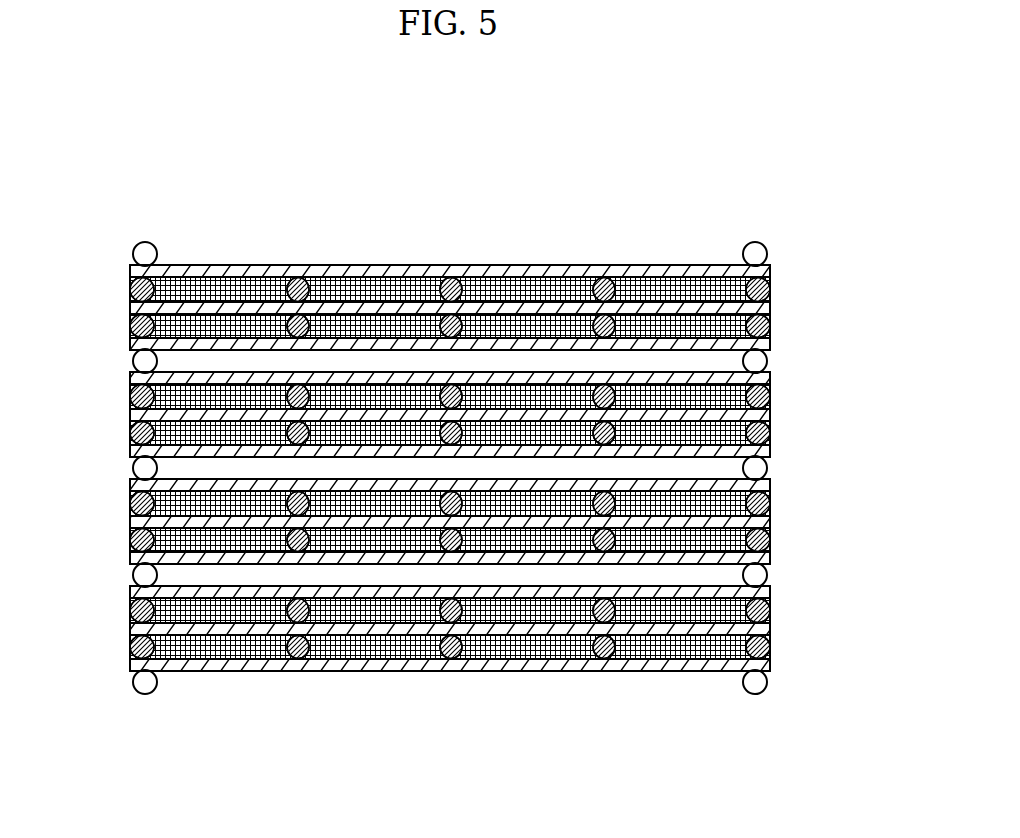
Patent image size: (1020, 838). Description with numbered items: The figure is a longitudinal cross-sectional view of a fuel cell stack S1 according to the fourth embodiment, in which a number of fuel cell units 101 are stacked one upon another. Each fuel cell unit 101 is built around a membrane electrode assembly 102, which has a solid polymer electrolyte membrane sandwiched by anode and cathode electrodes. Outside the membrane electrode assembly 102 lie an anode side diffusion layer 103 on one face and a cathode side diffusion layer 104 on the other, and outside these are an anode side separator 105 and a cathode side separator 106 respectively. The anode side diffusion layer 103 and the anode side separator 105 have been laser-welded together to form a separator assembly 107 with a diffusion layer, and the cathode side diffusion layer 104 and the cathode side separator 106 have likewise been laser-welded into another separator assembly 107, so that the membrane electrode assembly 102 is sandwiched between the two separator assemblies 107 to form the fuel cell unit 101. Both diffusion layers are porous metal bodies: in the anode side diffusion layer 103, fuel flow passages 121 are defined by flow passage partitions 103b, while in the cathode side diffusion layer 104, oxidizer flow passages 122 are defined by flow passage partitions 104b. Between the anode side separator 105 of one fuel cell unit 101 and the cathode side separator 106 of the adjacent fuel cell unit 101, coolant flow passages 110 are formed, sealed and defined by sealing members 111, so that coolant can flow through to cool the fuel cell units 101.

The fuel cell stack S1 is at (531, 214).
The fuel cell unit 101 is at (113, 267).
The sealing member 111 is at (131, 470).
The coolant flow passage 110 is at (240, 582).
The separator assembly with diffusion layer 107 is at (857, 555).
The anode side separator 105 is at (768, 595).
The anode side diffusion layer 103 is at (768, 615).
The flow passage partition 103b is at (440, 612).
The fuel flow passage 121 is at (527, 612).
The cathode side diffusion layer 104 is at (768, 650).
The flow passage partition 104b is at (614, 643).
The oxidizer flow passage 122 is at (680, 647).
The cathode side separator 106 is at (768, 558).
The membrane electrode assembly 102 is at (768, 627).